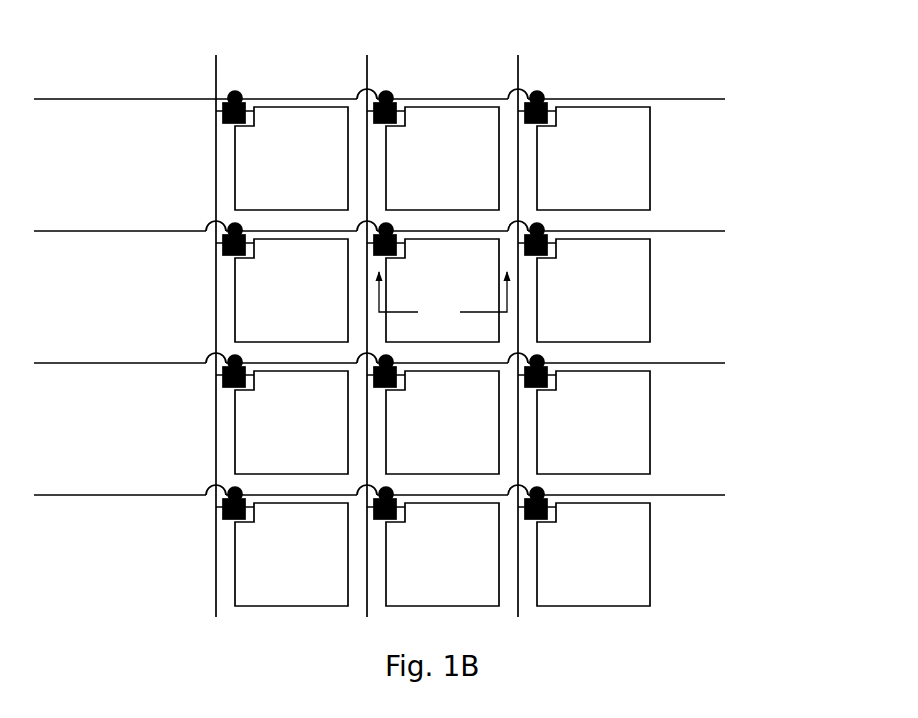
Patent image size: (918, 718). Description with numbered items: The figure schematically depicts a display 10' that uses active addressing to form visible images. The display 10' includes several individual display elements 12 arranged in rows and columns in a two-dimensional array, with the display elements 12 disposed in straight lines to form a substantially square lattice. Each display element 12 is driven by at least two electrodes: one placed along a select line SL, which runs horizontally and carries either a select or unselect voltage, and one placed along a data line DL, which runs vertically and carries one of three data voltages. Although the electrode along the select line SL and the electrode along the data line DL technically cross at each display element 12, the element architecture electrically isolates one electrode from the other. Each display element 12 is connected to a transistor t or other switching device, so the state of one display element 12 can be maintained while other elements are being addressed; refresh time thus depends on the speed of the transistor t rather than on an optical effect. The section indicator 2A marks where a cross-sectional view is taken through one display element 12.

The display element 12 is at (303, 130).
The display 10' is at (385, 333).
The data line DL is at (368, 138).
The select line SL is at (688, 230).
The transistor t is at (232, 362).
The section line 2A is at (445, 303).